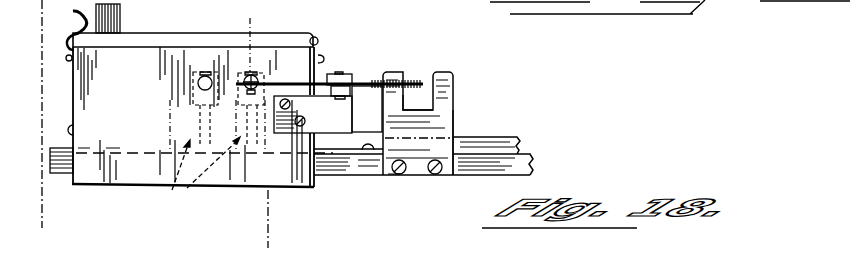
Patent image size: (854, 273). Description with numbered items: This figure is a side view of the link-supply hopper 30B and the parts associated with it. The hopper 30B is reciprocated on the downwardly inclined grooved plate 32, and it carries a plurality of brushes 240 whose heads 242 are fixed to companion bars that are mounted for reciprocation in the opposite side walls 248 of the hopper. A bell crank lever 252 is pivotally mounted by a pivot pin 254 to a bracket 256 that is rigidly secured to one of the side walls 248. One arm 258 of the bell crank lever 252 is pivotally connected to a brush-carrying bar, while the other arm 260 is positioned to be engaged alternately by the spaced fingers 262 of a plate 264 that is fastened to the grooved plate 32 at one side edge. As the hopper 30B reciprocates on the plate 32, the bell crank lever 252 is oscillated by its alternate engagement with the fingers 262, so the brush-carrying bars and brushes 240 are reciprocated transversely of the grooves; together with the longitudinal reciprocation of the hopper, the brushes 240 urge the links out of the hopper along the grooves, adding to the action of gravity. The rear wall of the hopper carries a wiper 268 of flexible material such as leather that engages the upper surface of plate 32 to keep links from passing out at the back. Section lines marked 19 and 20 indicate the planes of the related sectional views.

The hopper 30B is at (251, 188).
The wiper 268 is at (70, 110).
The heads 242 is at (200, 72).
The bell crank lever 252 is at (370, 79).
The pivot pin 254 is at (343, 72).
The bracket 256 is at (350, 77).
The arm 258 is at (277, 65).
The arm 260 is at (417, 80).
The spaced fingers 262 is at (420, 93).
The plate 264 is at (456, 125).
The plate 32 is at (530, 168).
The brushes 240 is at (196, 174).
The side walls 248 is at (225, 188).
The section line 19 is at (267, 220).
The section line 20 is at (42, 218).